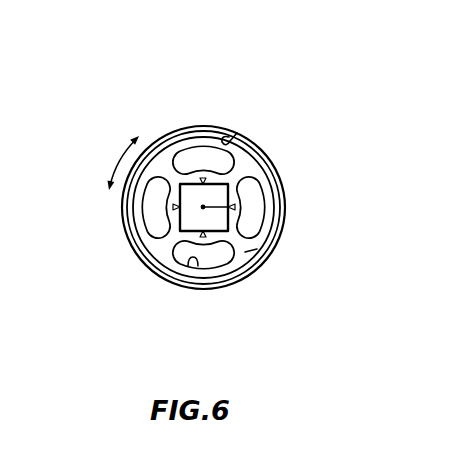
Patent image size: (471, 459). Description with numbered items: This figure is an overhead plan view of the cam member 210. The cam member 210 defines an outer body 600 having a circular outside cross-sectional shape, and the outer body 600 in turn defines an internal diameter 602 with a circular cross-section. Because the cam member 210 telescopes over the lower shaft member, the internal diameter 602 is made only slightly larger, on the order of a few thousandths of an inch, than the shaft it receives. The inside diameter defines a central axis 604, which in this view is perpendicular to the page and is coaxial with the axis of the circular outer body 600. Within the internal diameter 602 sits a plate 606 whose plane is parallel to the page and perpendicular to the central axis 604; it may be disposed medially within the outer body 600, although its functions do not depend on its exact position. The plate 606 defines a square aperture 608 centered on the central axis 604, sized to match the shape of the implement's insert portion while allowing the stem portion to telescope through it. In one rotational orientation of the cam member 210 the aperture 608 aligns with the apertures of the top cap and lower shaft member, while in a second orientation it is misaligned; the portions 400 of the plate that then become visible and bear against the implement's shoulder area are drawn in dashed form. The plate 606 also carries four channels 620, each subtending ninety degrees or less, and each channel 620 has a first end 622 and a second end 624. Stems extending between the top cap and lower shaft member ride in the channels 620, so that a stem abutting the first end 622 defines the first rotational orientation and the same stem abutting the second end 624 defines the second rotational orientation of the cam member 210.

The cam member 210 is at (307, 142).
The portions of the plate member 400 is at (203, 178).
The outer body 600 is at (163, 143).
The internal diameter 602 is at (237, 133).
The central axis 604 is at (240, 207).
The plate 606 is at (247, 272).
The aperture 608 is at (177, 227).
The channel 620 is at (203, 263).
The first end 622 is at (220, 262).
The second end 624 is at (184, 261).